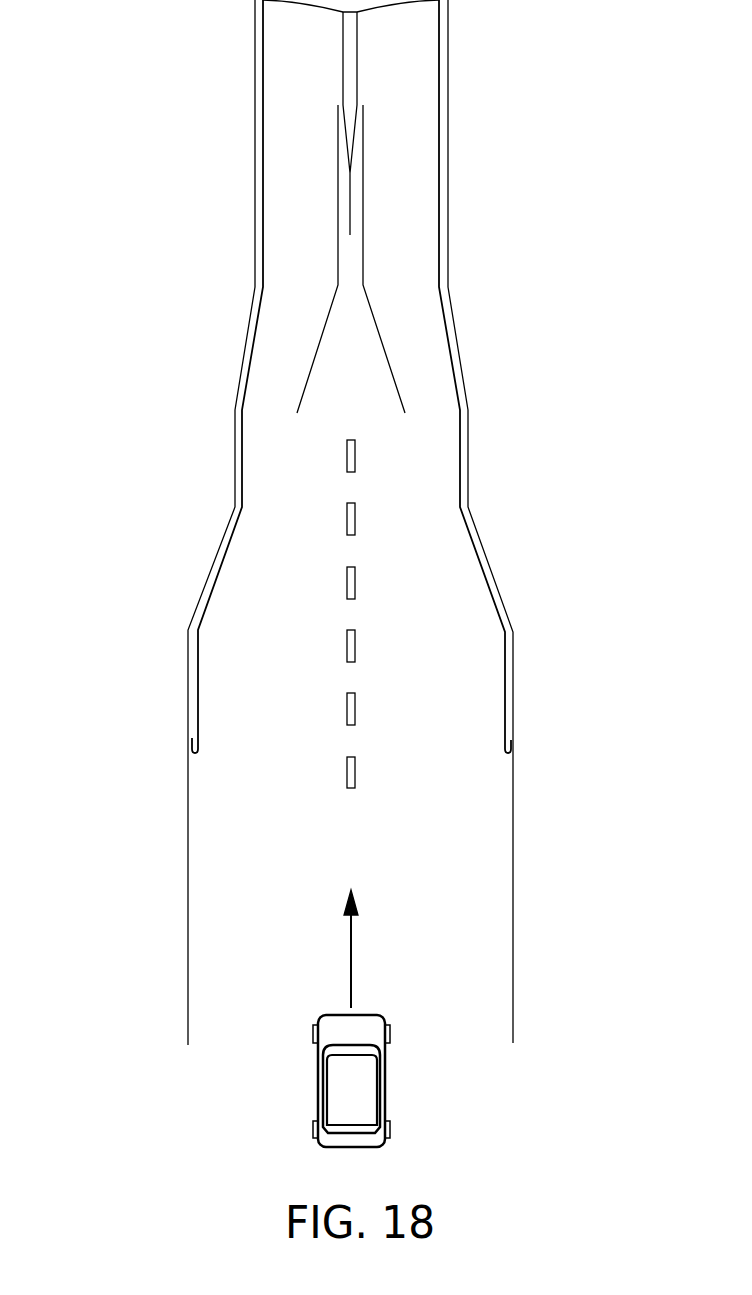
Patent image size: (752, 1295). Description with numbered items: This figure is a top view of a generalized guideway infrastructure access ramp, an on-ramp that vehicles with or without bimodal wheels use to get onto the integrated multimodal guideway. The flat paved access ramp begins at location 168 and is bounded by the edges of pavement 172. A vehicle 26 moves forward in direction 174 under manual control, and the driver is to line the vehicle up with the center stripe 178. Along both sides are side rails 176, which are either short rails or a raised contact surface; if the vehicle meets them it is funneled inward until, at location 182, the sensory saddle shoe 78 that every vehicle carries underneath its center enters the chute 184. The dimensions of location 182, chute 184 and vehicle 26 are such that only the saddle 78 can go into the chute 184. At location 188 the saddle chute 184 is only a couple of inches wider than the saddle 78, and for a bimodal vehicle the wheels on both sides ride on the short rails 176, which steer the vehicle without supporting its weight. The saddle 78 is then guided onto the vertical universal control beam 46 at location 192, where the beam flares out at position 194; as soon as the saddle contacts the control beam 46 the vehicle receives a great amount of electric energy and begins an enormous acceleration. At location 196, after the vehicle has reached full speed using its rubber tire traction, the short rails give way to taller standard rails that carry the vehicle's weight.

The vehicle 26 is at (386, 1075).
The vertical universal control beam 46 is at (357, 75).
The sensory saddle shoe 78 is at (338, 1100).
The beginning of access ramp 168 is at (226, 987).
The edges of pavement 172 is at (189, 917).
The direction of travel 174 is at (353, 953).
The side rails 176 is at (191, 735).
The center stripe 178 is at (355, 778).
The funnel location 182 is at (470, 428).
The saddle chute 184 is at (375, 322).
The narrow chute location 188 is at (338, 266).
The control beam entry location 192 is at (364, 213).
The flare position 194 is at (358, 152).
The full-speed location 196 is at (357, 38).